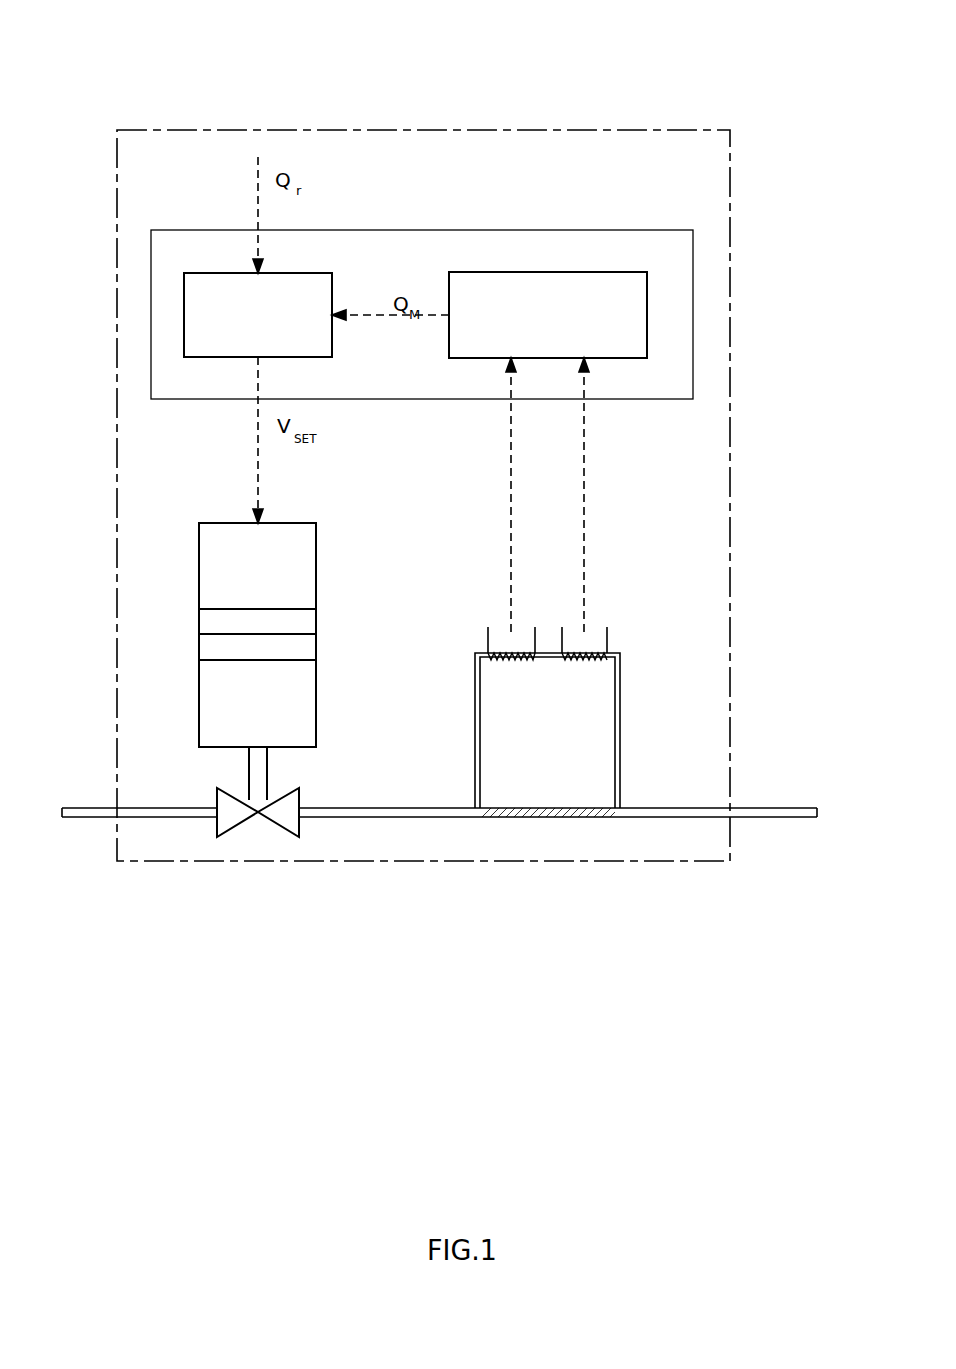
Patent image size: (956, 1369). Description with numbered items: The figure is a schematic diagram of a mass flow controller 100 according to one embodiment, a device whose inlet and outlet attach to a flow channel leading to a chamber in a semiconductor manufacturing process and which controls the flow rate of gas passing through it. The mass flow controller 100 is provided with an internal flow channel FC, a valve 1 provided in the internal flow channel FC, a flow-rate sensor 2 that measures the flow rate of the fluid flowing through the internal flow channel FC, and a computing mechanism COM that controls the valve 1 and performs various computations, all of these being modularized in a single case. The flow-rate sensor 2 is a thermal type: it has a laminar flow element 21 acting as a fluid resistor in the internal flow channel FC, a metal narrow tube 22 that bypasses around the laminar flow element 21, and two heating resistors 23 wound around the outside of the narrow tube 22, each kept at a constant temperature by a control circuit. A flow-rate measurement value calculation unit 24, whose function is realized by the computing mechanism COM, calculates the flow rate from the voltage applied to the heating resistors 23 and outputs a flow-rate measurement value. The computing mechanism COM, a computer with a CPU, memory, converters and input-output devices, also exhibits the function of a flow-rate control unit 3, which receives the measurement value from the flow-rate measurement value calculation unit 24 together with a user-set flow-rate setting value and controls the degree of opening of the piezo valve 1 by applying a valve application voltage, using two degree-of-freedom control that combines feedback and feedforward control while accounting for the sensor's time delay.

The mass flow controller 100 is at (238, 62).
The valve 1 is at (220, 523).
The flow-rate sensor 2 is at (645, 592).
The flow-rate control unit 3 is at (184, 315).
The laminar flow element 21 is at (547, 817).
The narrow tube 22 is at (475, 676).
The heating resistors 23 is at (510, 660).
The flow-rate measurement value calculation unit 24 is at (523, 272).
The computing mechanism COM is at (408, 230).
The internal flow channel FC is at (383, 817).